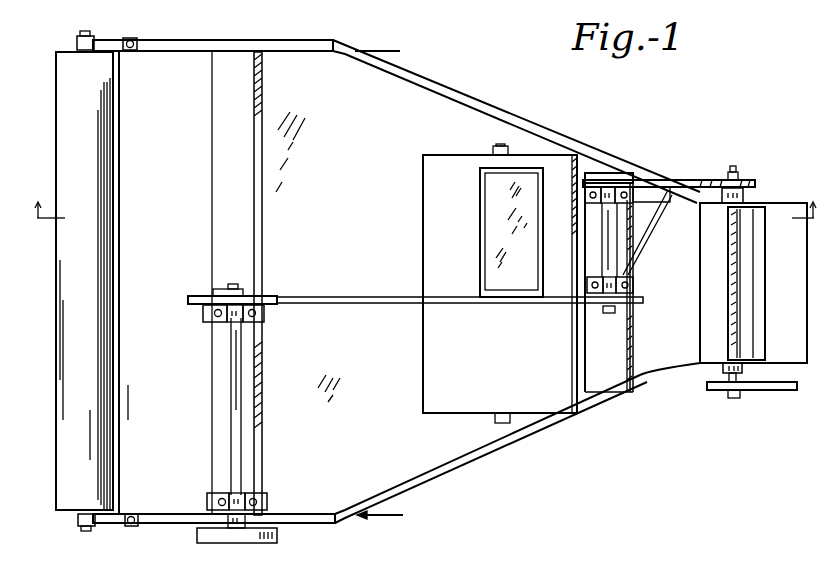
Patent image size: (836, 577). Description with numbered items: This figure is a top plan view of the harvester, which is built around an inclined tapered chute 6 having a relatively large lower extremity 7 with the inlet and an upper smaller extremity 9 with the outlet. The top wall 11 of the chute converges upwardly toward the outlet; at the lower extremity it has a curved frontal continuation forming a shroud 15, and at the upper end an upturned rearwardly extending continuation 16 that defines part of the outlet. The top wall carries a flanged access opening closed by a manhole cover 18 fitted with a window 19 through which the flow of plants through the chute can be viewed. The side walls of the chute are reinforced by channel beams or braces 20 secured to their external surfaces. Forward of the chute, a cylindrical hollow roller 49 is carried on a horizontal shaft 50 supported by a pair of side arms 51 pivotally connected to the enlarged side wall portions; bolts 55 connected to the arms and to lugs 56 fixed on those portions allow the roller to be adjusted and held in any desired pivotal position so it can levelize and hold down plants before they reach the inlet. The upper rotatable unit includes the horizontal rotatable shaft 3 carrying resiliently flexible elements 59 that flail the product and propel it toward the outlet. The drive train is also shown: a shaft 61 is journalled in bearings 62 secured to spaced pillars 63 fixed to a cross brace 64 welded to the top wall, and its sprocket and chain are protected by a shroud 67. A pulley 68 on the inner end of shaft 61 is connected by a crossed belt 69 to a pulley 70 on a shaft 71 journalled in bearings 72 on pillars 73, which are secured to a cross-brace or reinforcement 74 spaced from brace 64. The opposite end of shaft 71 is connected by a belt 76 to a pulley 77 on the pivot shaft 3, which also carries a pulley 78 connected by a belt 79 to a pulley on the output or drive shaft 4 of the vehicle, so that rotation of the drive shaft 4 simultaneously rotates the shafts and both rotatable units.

The horizontal rotatable shaft 3 is at (733, 172).
The output or drive shaft 4 is at (420, 225).
The inclined tapered chute 6 is at (413, 96).
The lower extremity 7 is at (296, 58).
The upper smaller extremity 9 is at (684, 213).
The top wall 11 is at (326, 257).
The shroud 15 is at (158, 65).
The upturned rearwardly extending continuation 16 is at (706, 254).
The manhole cover 18 is at (500, 283).
The window 19 is at (494, 238).
The channel beams or braces 20 is at (462, 100).
The cylindrical hollow roller 49 is at (64, 330).
The horizontal shaft 50 is at (87, 528).
The side arms 51 is at (196, 46).
The bolts 55 is at (128, 38).
The lugs 56 is at (136, 42).
The elements 59 is at (745, 312).
The shaft 61 is at (234, 378).
The bearings 62 is at (206, 314).
The pillars 63 is at (265, 317).
The cross brace 64 is at (215, 143).
The shroud 67 is at (257, 541).
The pulley 68 is at (194, 295).
The crossed belt 69 is at (360, 300).
The pulley 70 is at (636, 307).
The shaft 71 is at (609, 311).
The bearings 72 is at (588, 192).
The pillars 73 is at (587, 204).
The cross-brace or reinforcement 74 is at (605, 387).
The belt 76 is at (700, 178).
The pulley 77 is at (756, 181).
The pulley 78 is at (722, 391).
The belt 79 is at (797, 391).